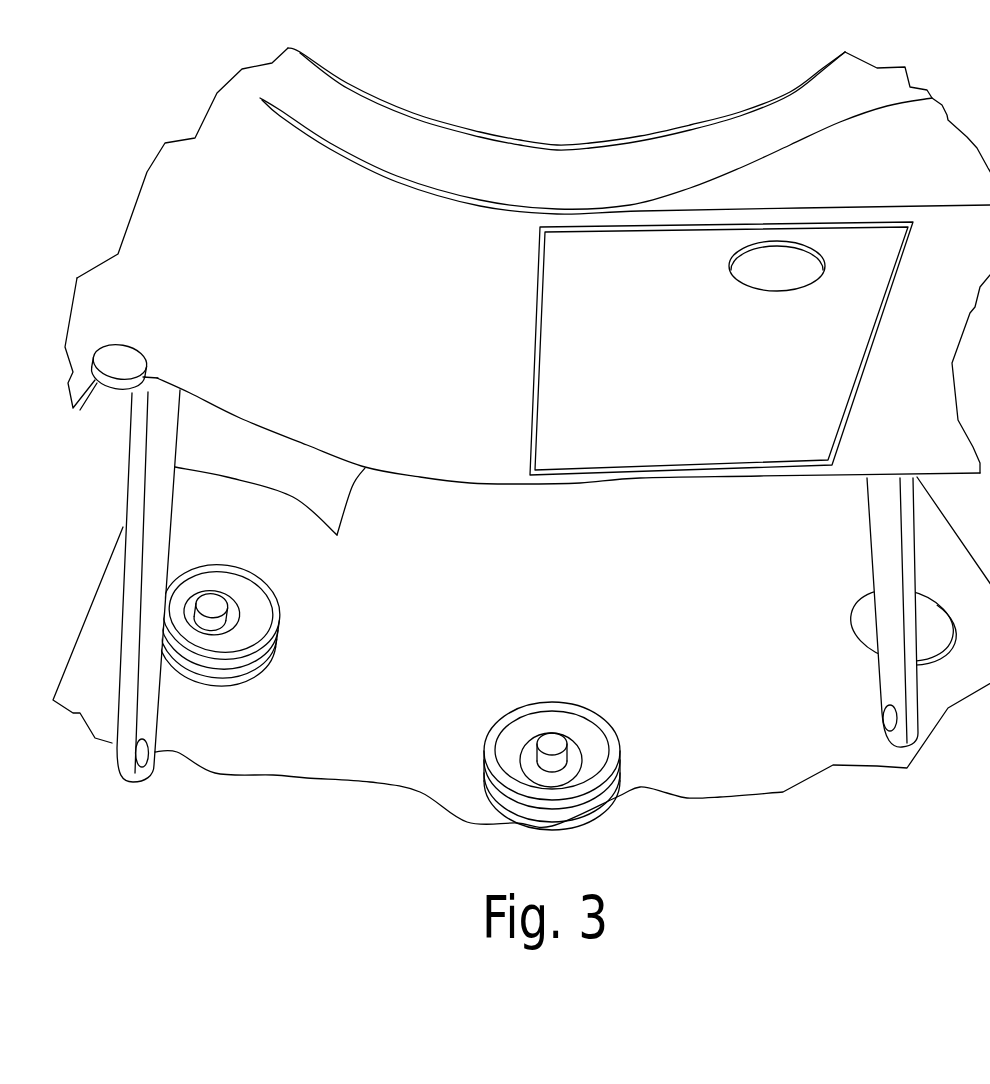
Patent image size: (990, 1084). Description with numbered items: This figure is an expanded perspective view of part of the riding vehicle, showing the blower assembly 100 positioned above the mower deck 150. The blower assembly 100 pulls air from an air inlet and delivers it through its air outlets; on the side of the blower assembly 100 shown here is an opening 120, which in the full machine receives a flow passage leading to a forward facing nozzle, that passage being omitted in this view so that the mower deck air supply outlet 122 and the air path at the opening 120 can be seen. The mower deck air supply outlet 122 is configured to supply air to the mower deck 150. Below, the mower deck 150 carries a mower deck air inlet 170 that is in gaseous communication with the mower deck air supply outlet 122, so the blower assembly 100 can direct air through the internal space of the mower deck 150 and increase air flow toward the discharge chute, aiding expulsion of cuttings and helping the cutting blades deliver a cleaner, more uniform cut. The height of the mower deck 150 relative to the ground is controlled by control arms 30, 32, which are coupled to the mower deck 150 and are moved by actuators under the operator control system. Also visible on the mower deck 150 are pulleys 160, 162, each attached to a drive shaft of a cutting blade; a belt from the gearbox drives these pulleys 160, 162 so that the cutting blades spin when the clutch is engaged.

The blower assembly 100 is at (385, 341).
The opening 120 is at (862, 355).
The mower deck air supply outlet 122 is at (753, 283).
The mower deck 150 is at (567, 571).
The pulley 160 is at (567, 708).
The pulley 162 is at (270, 637).
The mower deck air inlet 170 is at (853, 613).
The control arm 30 is at (892, 677).
The control arm 32 is at (165, 523).